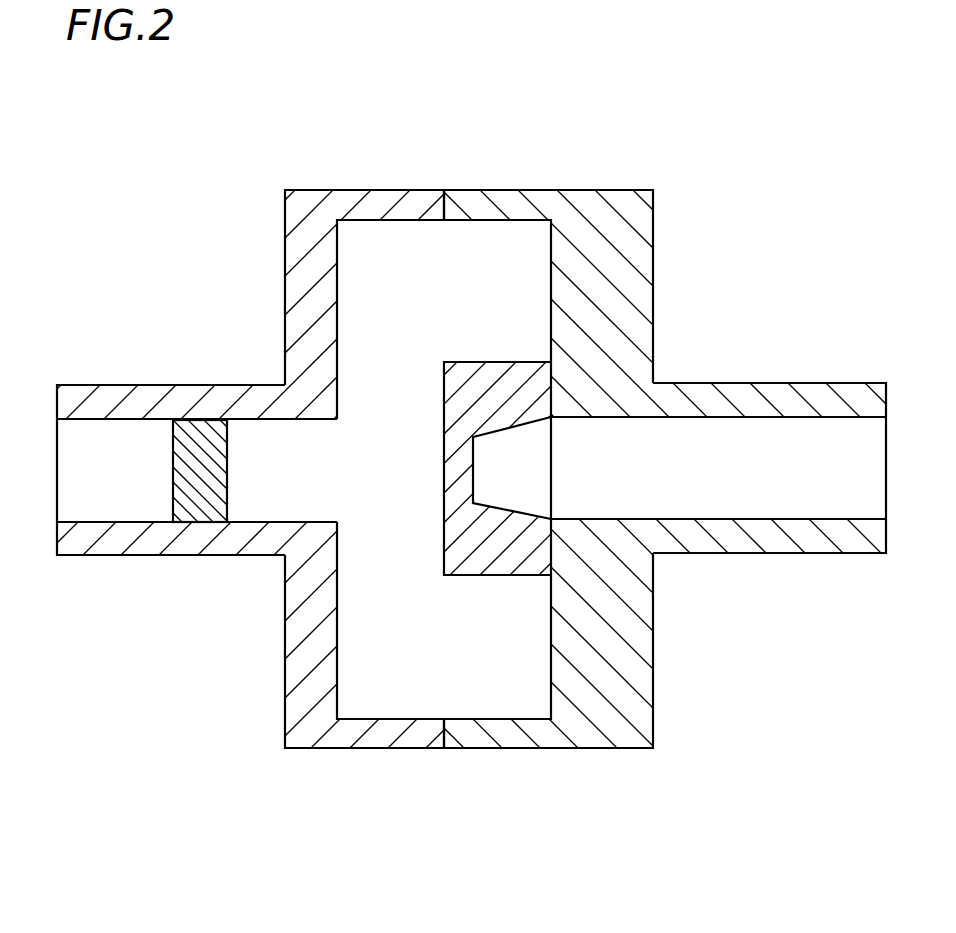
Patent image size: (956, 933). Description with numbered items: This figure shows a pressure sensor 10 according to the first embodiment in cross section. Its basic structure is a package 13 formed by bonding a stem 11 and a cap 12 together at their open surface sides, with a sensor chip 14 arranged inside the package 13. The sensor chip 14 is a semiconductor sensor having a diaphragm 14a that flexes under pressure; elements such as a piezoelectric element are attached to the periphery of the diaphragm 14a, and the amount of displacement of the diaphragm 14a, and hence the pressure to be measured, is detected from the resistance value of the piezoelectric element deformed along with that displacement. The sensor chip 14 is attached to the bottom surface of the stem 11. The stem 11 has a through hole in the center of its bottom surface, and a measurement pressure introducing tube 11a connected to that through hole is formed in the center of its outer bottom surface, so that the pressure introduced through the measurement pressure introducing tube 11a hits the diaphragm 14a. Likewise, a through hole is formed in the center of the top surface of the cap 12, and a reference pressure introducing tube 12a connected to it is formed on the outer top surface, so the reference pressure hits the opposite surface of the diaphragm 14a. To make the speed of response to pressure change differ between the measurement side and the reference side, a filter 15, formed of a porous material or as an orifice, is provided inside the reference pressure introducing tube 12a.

The pressure sensor 10 is at (458, 138).
The stem 11 is at (478, 515).
The measurement pressure introducing tube 11a is at (787, 400).
The cap 12 is at (478, 515).
The reference pressure introducing tube 12a is at (172, 540).
The package 13 is at (478, 536).
The sensor chip 14 is at (495, 520).
The diaphragm 14a is at (447, 530).
The filter 15 is at (200, 438).